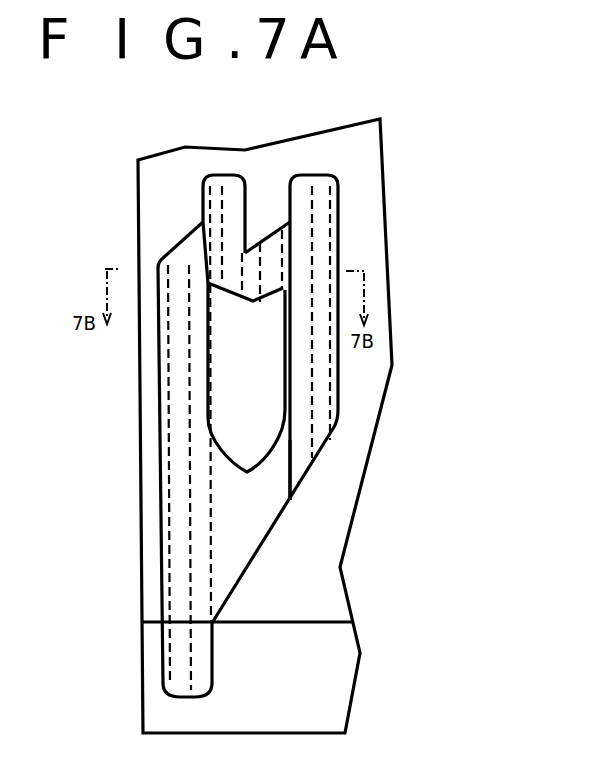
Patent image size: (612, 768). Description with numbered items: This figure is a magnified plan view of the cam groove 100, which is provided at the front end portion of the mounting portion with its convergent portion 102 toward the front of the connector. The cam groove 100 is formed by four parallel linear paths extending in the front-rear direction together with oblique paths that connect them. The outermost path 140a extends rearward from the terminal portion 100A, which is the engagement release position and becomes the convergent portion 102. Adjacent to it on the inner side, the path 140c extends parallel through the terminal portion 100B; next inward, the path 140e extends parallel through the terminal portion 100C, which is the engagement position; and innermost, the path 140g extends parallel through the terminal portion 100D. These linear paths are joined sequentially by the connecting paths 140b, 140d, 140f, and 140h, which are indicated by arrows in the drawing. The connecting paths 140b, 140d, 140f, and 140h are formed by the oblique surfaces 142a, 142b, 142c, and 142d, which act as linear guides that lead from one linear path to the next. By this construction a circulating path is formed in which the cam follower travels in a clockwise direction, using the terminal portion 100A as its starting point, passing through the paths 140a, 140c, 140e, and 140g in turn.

The cam groove 100 is at (155, 458).
The terminal portion 100A is at (173, 688).
The convergent portion 102 is at (207, 666).
The terminal portion 100B is at (210, 190).
The terminal portion 100C is at (250, 305).
The terminal portion 100D is at (323, 182).
The path 140a is at (175, 497).
The path 140b is at (170, 262).
The path 140c is at (256, 205).
The path 140d is at (198, 254).
The path 140e is at (281, 262).
The path 140f is at (280, 267).
The path 140g is at (327, 360).
The path 140h is at (265, 493).
The oblique surface 142a is at (163, 262).
The oblique surface 142b is at (248, 278).
The oblique surface 142c is at (258, 250).
The oblique surface 142d is at (268, 518).